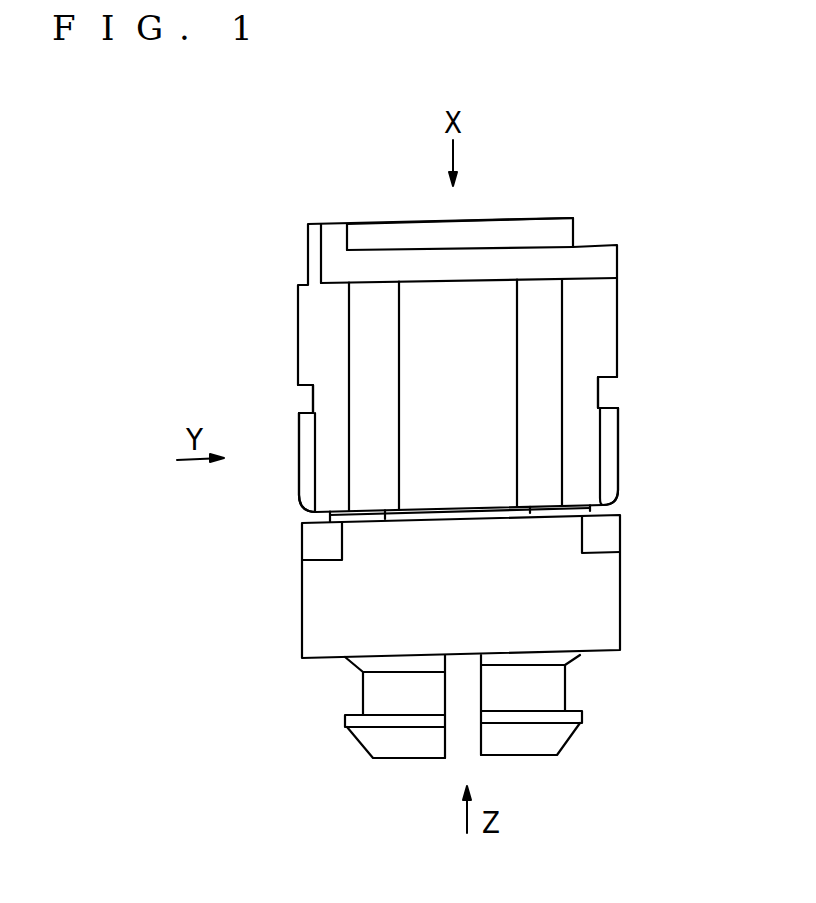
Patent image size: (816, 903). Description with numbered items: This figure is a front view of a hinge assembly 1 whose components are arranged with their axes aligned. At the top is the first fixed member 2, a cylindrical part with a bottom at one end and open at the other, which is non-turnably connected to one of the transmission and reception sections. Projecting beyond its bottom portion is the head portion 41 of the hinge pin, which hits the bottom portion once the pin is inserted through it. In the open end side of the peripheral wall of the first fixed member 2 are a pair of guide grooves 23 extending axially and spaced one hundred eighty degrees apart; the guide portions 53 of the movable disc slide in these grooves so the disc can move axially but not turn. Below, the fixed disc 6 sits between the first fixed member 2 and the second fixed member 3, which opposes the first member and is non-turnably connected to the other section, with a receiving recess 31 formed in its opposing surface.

The hinge assembly 1 is at (642, 225).
The first fixed member 2 is at (617, 323).
The second fixed member 3 is at (620, 608).
The fixed disc 6 is at (302, 538).
The guide grooves 23 is at (313, 405).
The receiving recess 31 is at (620, 540).
The head portion 41 is at (523, 217).
The guide portions 53 is at (618, 457).